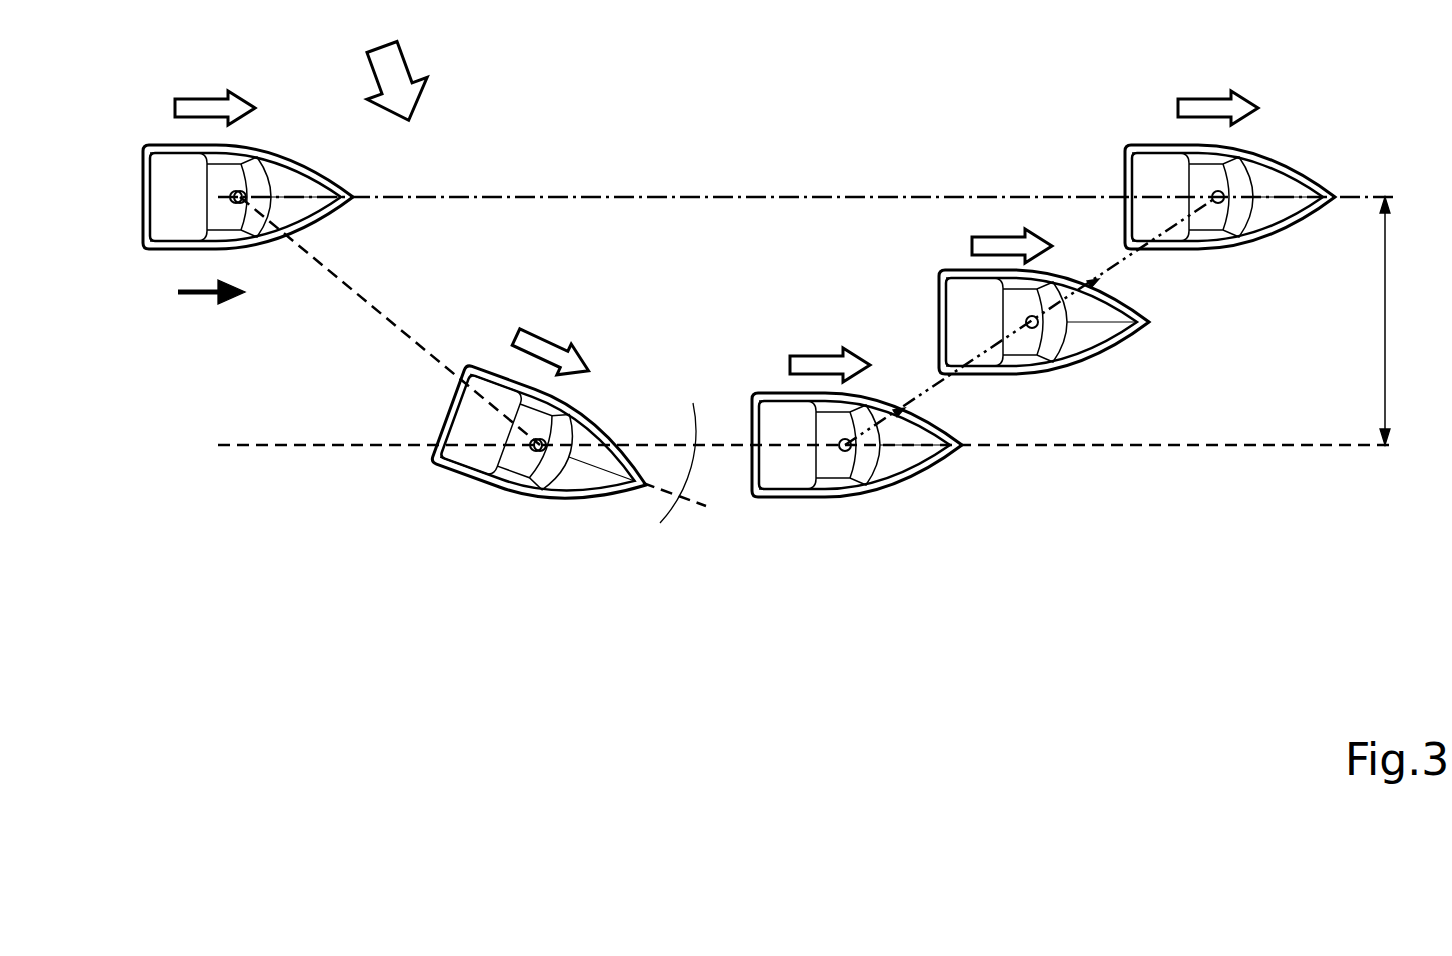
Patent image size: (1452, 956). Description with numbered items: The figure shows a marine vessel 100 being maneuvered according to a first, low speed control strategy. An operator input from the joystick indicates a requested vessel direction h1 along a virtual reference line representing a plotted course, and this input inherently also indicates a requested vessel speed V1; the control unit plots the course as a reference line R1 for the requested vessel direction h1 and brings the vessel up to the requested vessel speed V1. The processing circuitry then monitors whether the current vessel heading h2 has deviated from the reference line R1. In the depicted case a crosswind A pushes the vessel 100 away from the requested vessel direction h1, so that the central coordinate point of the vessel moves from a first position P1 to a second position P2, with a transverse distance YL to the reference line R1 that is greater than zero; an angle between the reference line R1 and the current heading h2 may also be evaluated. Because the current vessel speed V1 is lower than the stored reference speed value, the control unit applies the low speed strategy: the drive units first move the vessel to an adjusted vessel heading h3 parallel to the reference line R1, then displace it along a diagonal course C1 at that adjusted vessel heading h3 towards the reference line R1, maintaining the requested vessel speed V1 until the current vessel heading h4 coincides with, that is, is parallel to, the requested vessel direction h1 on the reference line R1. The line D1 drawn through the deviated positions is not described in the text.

The marine vessel 100 is at (175, 232).
The crosswind A is at (403, 78).
The first position P1 is at (244, 191).
The second position P2 is at (541, 452).
The requested vessel direction h1 is at (716, 90).
The current vessel heading h2 is at (552, 343).
The adjusted vessel heading h3 is at (830, 347).
The current vessel heading h4 is at (1012, 230).
The requested vessel speed V1 is at (219, 312).
The reference line R1 is at (757, 193).
The diagonal course C1 is at (932, 388).
The deviated parallel line D1 is at (1138, 445).
The transverse distance YL is at (1407, 321).